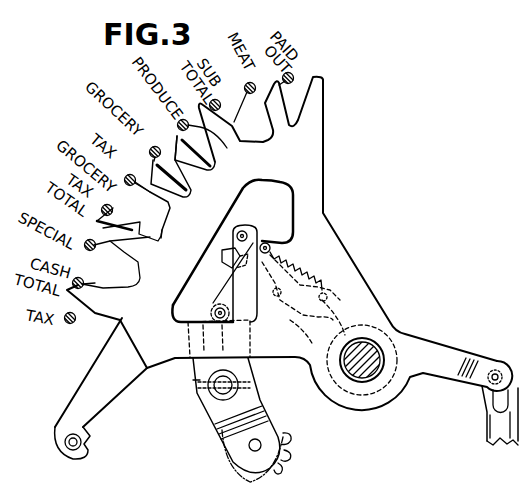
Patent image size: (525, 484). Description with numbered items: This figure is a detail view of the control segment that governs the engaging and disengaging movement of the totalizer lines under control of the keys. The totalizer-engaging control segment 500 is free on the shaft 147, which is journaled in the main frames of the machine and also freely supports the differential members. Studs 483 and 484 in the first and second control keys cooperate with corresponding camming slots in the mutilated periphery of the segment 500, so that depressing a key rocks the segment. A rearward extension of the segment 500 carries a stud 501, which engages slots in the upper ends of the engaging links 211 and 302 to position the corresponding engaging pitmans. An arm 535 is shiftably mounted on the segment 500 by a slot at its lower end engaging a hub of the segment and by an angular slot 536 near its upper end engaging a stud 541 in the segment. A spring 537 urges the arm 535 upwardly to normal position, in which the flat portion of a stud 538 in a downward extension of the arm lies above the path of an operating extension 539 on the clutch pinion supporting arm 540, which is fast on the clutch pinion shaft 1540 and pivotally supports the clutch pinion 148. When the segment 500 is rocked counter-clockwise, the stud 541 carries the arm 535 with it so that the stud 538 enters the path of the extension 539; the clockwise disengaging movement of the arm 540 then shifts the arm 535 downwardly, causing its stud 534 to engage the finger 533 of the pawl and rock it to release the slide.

The stud 483 is at (153, 147).
The stud 484 is at (75, 349).
The totalizer-engaging control segment 500 is at (312, 142).
The finger 533 is at (215, 226).
The stud 534 is at (242, 228).
The arm 535 is at (238, 274).
The angular slot 536 is at (258, 287).
The spring 537 is at (309, 272).
The stud 538 is at (215, 311).
The operating extension 539 is at (189, 327).
The clutch pinion supporting arm 540 is at (193, 379).
The clutch pinion shaft 1540 is at (249, 377).
The stud 541 is at (329, 325).
The shaft 147 is at (378, 347).
The clutch pinion 148 is at (292, 443).
The stud 501 is at (493, 369).
The engaging link 302 is at (485, 415).
The engaging link 211 is at (493, 430).